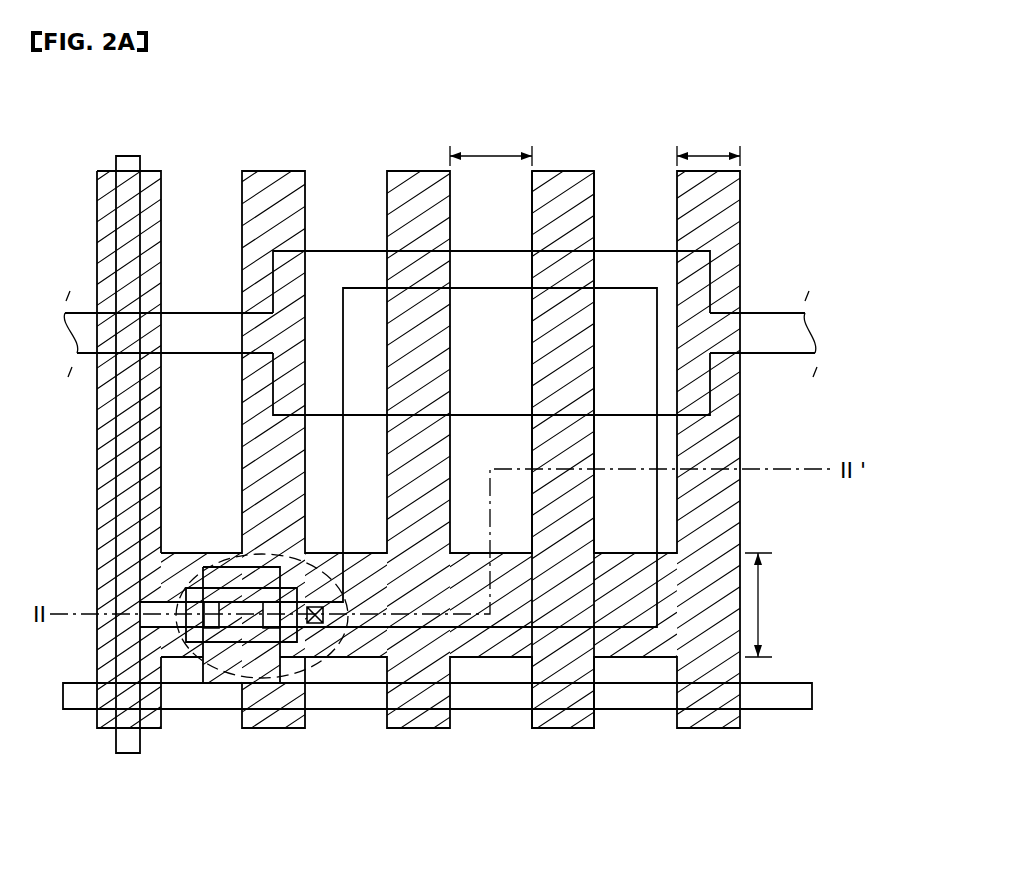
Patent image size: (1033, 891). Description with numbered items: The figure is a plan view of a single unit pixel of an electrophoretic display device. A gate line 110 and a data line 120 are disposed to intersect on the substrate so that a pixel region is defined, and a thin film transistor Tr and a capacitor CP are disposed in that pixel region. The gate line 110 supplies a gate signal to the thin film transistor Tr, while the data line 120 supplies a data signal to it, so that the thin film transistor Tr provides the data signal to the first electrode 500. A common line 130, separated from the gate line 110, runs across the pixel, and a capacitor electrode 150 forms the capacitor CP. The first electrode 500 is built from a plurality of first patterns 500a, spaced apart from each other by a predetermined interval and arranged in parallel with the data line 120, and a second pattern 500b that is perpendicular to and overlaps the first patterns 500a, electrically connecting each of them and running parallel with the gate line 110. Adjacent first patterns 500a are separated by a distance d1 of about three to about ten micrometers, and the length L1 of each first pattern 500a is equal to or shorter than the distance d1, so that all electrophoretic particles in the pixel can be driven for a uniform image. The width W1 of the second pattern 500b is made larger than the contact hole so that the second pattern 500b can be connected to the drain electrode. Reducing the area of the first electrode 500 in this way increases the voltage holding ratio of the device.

The gate line 110 is at (797, 697).
The data line 120 is at (640, 443).
The common line 130 is at (797, 330).
The capacitor lower electrode 150 is at (640, 395).
The capacitor CP is at (813, 397).
The thin film transistor Tr is at (255, 680).
The first electrode 500 is at (418, 470).
The first pattern 500a is at (558, 723).
The second pattern 500b is at (638, 655).
The separation distance d1 is at (491, 145).
The length of the first patterns L1 is at (708, 143).
The width of the second pattern W1 is at (766, 605).